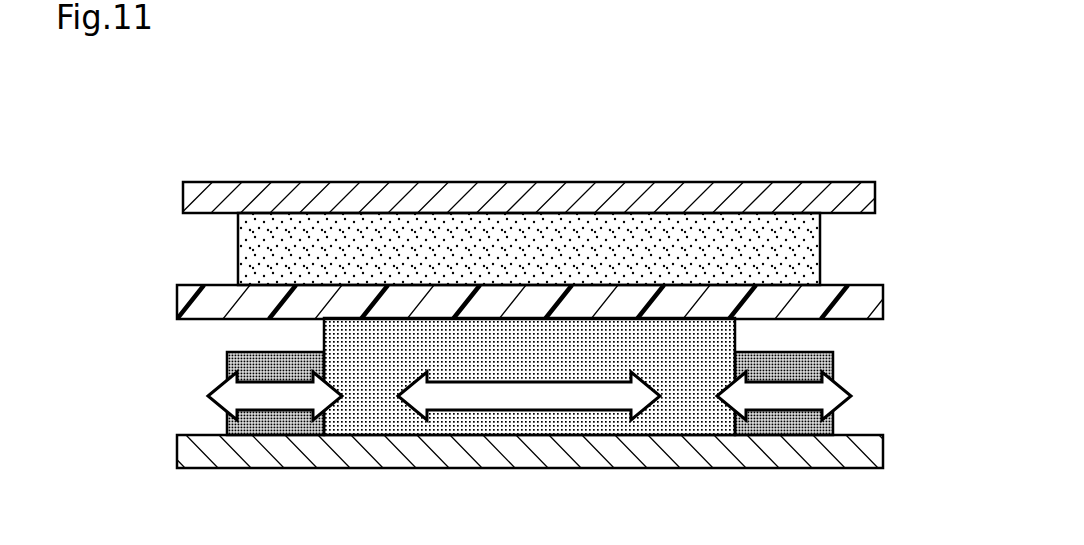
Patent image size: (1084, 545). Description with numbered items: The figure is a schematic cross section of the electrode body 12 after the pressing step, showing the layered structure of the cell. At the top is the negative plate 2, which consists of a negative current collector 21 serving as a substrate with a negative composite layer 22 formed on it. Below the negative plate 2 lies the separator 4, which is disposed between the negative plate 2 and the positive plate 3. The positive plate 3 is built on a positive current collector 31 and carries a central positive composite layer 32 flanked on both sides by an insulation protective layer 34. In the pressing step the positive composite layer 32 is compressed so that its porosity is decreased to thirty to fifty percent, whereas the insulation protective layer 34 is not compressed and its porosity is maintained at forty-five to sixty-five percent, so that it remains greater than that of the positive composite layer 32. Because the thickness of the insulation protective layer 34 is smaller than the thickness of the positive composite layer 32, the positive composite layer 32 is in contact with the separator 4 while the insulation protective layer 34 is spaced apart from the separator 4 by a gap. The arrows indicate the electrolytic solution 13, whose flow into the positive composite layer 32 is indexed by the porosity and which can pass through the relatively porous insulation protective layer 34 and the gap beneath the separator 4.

The electrode body 12 is at (854, 156).
The negative plate 2 is at (160, 183).
The negative current collector 21 is at (875, 196).
The negative composite layer 22 is at (820, 247).
The separator 4 is at (160, 284).
The positive plate 3 is at (160, 322).
The positive composite layer 32 is at (735, 335).
The insulation protective layer 34 is at (833, 418).
The positive current collector 31 is at (883, 451).
The electrolytic solution 13 is at (782, 403).